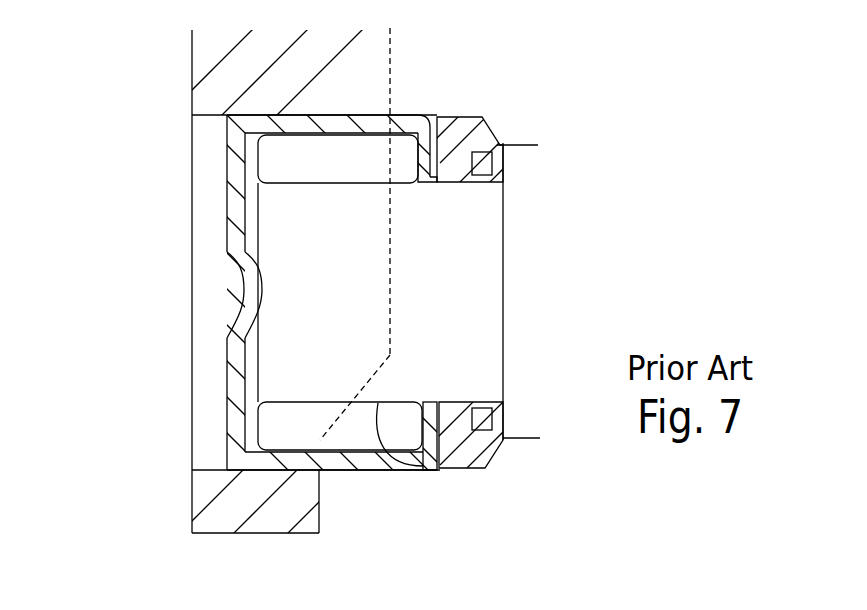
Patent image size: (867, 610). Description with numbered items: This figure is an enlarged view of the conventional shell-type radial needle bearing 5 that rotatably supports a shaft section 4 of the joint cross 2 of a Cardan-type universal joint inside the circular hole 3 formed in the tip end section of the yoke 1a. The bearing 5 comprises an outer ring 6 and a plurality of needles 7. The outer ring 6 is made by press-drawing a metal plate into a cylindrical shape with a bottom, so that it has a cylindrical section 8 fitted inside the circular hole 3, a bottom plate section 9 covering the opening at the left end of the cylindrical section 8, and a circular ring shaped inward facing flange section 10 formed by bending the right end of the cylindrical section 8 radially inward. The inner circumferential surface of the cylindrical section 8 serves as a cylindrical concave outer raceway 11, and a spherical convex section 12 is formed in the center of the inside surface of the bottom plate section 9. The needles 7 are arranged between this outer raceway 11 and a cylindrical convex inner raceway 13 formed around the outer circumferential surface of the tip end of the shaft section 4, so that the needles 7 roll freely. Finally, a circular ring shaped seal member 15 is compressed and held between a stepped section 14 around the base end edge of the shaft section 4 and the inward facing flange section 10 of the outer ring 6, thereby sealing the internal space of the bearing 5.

The yoke 1a is at (250, 68).
The joint cross 2 is at (518, 198).
The circular hole 3 is at (217, 468).
The shaft section 4 is at (290, 357).
The shell-type radial needle bearing 5 is at (226, 157).
The outer ring 6 is at (392, 142).
The needle 7 is at (335, 115).
The cylindrical section 8 is at (281, 435).
The bottom plate section 9 is at (238, 226).
The inward facing flange section 10 is at (441, 128).
The outer raceway 11 is at (437, 160).
The spherical convex section 12 is at (258, 290).
The inner raceway 13 is at (382, 455).
The stepped section 14 is at (533, 132).
The seal member 15 is at (478, 450).